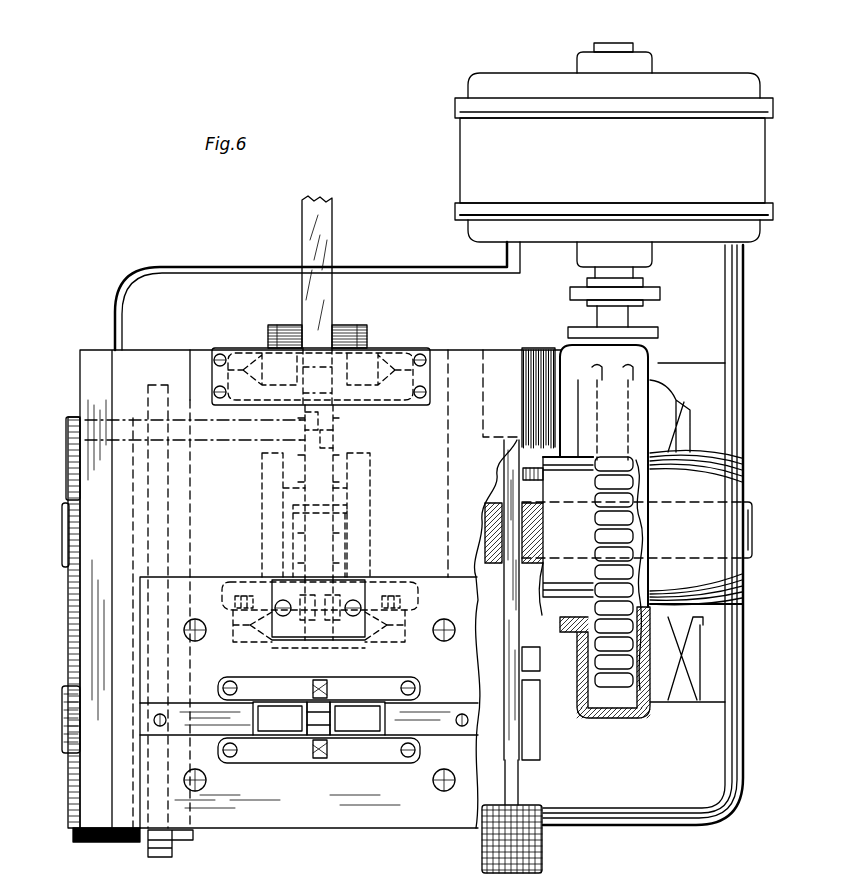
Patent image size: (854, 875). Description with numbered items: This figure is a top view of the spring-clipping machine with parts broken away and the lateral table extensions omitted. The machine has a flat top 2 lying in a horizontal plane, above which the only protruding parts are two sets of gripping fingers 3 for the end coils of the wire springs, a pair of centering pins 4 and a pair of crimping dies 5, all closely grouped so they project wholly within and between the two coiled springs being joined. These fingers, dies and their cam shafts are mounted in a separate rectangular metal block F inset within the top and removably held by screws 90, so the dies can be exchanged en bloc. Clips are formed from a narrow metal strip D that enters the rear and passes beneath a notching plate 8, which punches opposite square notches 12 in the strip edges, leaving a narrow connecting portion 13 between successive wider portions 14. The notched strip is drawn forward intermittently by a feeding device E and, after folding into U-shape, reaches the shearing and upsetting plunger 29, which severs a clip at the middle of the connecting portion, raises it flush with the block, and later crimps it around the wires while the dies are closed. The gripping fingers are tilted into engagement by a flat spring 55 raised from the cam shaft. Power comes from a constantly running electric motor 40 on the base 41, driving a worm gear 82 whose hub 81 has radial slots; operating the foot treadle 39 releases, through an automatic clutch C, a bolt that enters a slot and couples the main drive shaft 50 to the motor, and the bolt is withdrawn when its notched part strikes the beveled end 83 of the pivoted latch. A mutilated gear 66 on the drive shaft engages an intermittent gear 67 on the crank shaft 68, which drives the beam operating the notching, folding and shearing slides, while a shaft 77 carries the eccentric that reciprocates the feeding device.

The flat top 2 is at (328, 589).
The gripping fingers 3 is at (297, 690).
The centering pins 4 is at (326, 683).
The crimping dies 5 is at (319, 718).
The notching plate 8 is at (345, 352).
The square notches 12 is at (333, 426).
The narrow connecting portion 13 is at (310, 428).
The wider portions 14 is at (333, 441).
The shearing and upsetting plunger 29 is at (305, 739).
The foot treadle 39 is at (545, 849).
The electric motor 40 is at (614, 190).
The base 41 is at (744, 746).
The main drive shaft 50 is at (752, 535).
The flat spring 55 is at (309, 719).
The mutilated gear 66 is at (67, 605).
The intermittent gear 67 is at (63, 677).
The crank shaft 68 is at (63, 725).
The shaft 77 is at (503, 597).
The hub 81 is at (596, 572).
The worm gear 82 is at (603, 719).
The beveled end 83 is at (485, 513).
The screws 90 is at (204, 787).
The automatic clutch C is at (632, 527).
The metal strip D is at (332, 214).
The feeding device E is at (353, 518).
The metal block F is at (210, 580).